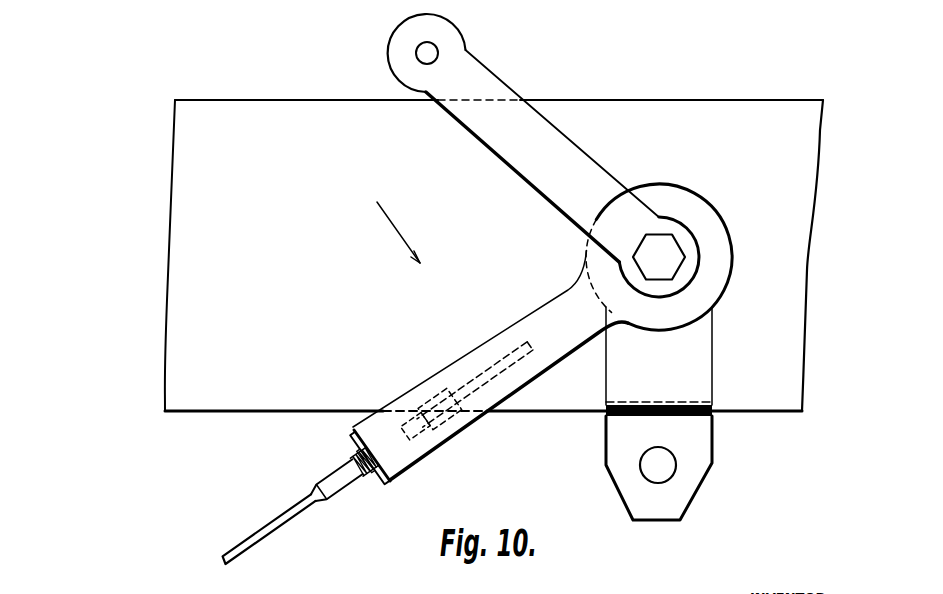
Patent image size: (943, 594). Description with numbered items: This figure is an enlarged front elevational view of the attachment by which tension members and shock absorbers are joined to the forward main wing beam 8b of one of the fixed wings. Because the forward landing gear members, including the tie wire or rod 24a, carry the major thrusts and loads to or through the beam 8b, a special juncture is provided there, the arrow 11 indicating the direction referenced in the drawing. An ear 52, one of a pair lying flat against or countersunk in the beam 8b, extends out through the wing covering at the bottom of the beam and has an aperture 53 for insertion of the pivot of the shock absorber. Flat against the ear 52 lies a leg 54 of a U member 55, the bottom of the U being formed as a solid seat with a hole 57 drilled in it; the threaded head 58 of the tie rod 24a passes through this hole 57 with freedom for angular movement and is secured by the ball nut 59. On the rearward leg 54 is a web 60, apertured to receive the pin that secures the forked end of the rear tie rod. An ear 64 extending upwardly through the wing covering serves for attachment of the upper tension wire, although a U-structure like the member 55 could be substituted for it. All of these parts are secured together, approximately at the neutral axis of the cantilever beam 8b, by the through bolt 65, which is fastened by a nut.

The forward main wing beam 8b is at (494, 255).
The direction arrow 11 is at (398, 232).
The tie wire or rod 24a is at (258, 531).
The ear 52 is at (659, 413).
The aperture 53 is at (648, 482).
The leg 54 is at (534, 314).
The U member 55 is at (357, 441).
The hole 57 is at (389, 482).
The threaded head 58 is at (347, 481).
The ball nut 59 is at (428, 456).
The web 60 is at (478, 393).
The ear 64 is at (495, 76).
The through bolt 65 is at (673, 259).